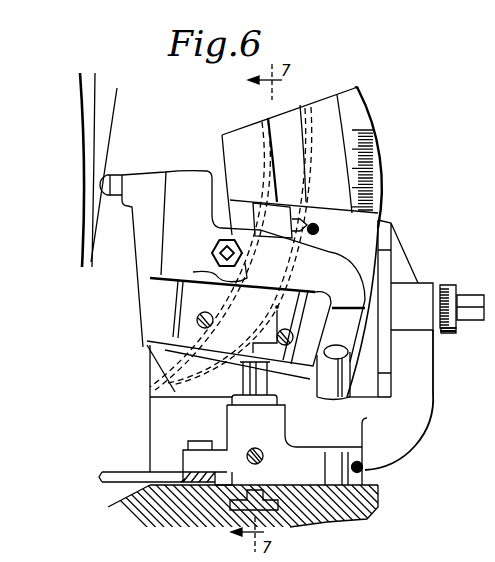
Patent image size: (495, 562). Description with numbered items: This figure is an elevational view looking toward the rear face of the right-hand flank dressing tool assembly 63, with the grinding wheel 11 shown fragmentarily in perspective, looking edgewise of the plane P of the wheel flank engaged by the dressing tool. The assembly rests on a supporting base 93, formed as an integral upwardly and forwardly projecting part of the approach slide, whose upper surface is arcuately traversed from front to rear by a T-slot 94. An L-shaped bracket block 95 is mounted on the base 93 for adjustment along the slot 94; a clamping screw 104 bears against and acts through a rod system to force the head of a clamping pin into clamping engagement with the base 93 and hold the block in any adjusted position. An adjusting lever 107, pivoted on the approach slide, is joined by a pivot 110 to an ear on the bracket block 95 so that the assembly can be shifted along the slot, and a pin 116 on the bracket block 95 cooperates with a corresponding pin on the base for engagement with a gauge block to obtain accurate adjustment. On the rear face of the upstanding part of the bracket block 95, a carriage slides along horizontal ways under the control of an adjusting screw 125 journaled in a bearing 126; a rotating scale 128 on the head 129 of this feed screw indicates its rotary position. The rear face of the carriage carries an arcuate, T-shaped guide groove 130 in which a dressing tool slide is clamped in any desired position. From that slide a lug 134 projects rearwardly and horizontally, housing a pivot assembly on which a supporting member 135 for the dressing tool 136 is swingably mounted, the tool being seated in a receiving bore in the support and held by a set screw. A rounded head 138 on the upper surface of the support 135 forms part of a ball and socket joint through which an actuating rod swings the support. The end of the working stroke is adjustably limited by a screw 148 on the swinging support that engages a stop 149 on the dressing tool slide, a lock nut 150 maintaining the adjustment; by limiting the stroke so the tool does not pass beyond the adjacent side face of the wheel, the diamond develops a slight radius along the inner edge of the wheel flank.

The workpiece 11 is at (97, 113).
The plane of workpiece surface P is at (108, 129).
The dressing tool 136 is at (119, 175).
The supporting member 135 is at (187, 182).
The dressing tool assembly 63 is at (400, 194).
The arcuate guide groove 130 is at (280, 172).
The rounded head 138 is at (313, 223).
The lock nut 150 is at (216, 246).
The screw 148 is at (213, 252).
The stop 149 is at (207, 267).
The lug 134 is at (290, 300).
The clamping screw 104 is at (244, 381).
The pivot 110 is at (200, 441).
The adjusting lever 107 is at (123, 473).
The bracket block 95 is at (409, 446).
The pin 116 is at (365, 473).
The T-slot 94 is at (235, 508).
The supporting base 93 is at (367, 515).
The bearing 126 is at (427, 290).
The adjusting screw 125 is at (470, 298).
The rotating scale 128 is at (456, 331).
The head 129 is at (445, 334).